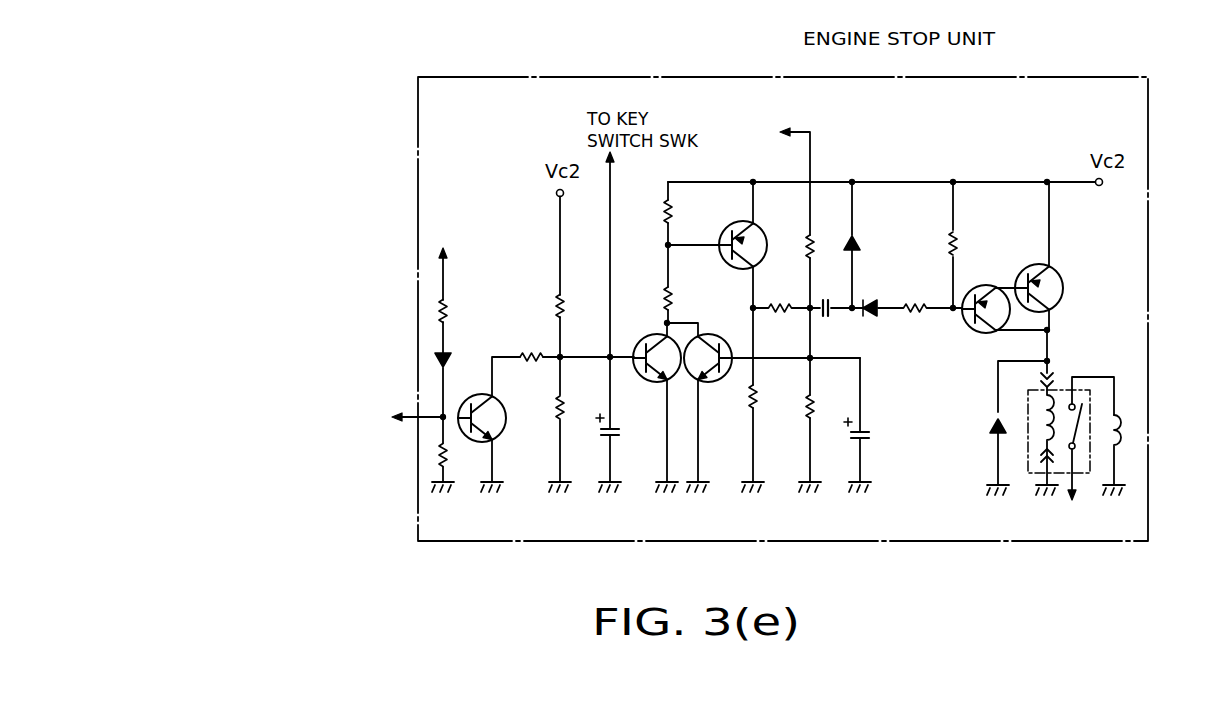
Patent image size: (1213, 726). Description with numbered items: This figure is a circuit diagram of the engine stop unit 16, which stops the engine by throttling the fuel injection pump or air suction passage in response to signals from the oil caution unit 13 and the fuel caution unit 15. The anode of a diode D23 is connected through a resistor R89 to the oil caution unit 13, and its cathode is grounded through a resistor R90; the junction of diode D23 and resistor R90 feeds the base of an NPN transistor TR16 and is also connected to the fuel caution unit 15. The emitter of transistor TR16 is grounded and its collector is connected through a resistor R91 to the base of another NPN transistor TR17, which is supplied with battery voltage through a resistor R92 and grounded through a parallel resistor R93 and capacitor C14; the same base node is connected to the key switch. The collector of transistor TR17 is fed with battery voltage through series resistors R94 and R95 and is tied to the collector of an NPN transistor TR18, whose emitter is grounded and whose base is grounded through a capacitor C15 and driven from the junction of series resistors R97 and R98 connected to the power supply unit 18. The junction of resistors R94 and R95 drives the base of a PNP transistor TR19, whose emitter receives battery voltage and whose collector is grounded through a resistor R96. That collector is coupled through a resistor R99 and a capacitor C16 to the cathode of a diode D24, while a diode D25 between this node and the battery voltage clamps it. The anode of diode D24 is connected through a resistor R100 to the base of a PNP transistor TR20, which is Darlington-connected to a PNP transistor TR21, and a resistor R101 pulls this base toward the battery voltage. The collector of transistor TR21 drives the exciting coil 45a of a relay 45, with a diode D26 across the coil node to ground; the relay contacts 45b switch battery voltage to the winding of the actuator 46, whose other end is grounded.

The engine stop unit 16 is at (752, 76).
The oil caution unit 13 is at (450, 197).
The fuel caution unit 15 is at (272, 421).
The power supply unit 18 is at (887, 170).
The relay 45 is at (1069, 431).
The exciting coil 45a is at (1040, 405).
The contacts 45b is at (1085, 420).
The actuator 46 is at (1122, 437).
The resistor R89 is at (465, 312).
The resistor R90 is at (464, 458).
The resistor R91 is at (531, 345).
The resistor R92 is at (538, 305).
The resistor R93 is at (580, 407).
The resistor R94 is at (690, 292).
The resistor R95 is at (648, 211).
The resistor R96 is at (773, 397).
The resistor R97 is at (791, 254).
The resistor R98 is at (830, 406).
The resistor R99 is at (786, 320).
The resistor R100 is at (922, 321).
The resistor R101 is at (981, 239).
The diode D23 is at (462, 348).
The diode D24 is at (881, 295).
The diode D25 is at (875, 239).
The diode D26 is at (978, 431).
The capacitor C14 is at (627, 430).
The capacitor C15 is at (878, 433).
The capacitor C16 is at (833, 320).
The NPN transistor TR16 is at (502, 382).
The NPN transistor TR17 is at (648, 347).
The NPN transistor TR18 is at (716, 347).
The PNP transistor TR19 is at (763, 236).
The PNP transistor TR20 is at (987, 296).
The PNP transistor TR21 is at (1060, 283).